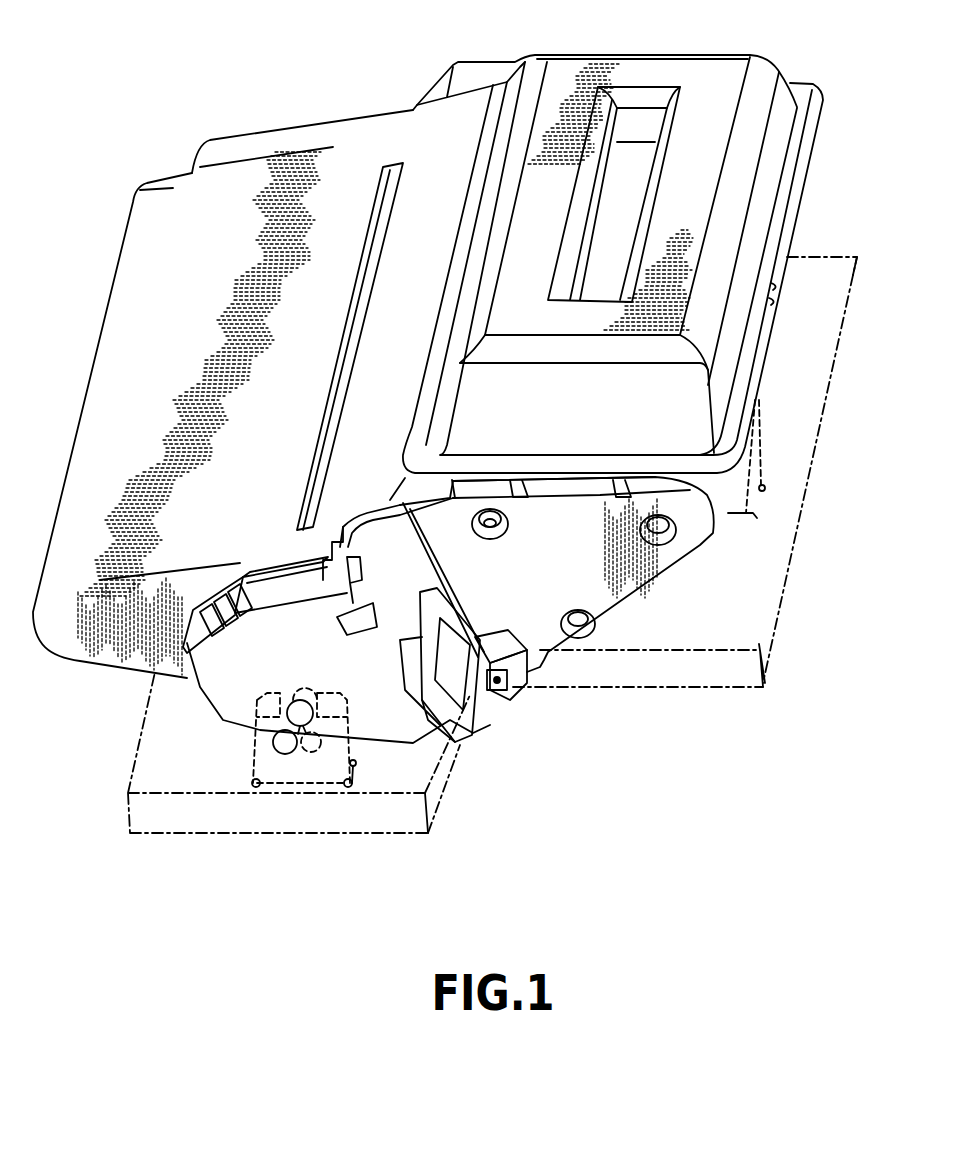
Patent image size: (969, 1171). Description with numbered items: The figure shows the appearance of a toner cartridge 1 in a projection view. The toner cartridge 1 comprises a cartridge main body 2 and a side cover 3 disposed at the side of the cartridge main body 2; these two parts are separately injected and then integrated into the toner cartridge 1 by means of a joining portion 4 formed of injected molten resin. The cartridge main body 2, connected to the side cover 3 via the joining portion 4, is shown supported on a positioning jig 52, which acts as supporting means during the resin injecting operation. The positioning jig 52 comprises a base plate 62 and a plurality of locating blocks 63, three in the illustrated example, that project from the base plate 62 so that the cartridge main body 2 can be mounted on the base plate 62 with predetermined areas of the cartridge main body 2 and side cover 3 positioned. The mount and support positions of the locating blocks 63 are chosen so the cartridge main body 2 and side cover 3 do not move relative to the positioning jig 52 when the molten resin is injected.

The toner cartridge 1 is at (253, 112).
The cartridge main body 2 is at (219, 198).
The side cover 3 is at (637, 600).
The joining portion 4 is at (493, 535).
The positioning jig 52 is at (241, 844).
The base plate 62 is at (808, 378).
The locating block 63 is at (758, 458).